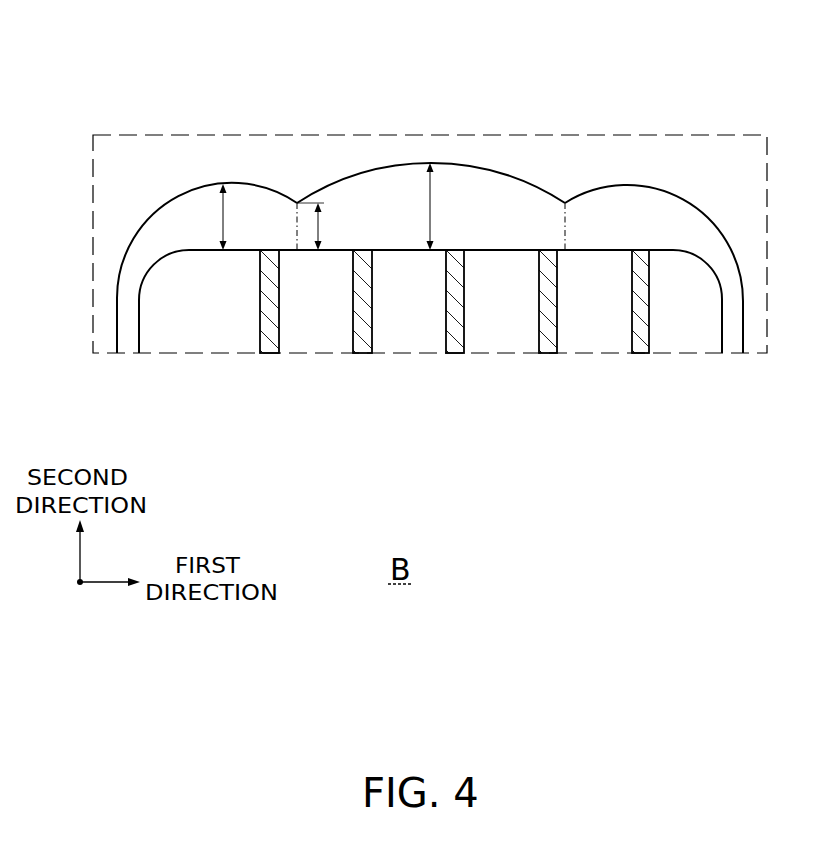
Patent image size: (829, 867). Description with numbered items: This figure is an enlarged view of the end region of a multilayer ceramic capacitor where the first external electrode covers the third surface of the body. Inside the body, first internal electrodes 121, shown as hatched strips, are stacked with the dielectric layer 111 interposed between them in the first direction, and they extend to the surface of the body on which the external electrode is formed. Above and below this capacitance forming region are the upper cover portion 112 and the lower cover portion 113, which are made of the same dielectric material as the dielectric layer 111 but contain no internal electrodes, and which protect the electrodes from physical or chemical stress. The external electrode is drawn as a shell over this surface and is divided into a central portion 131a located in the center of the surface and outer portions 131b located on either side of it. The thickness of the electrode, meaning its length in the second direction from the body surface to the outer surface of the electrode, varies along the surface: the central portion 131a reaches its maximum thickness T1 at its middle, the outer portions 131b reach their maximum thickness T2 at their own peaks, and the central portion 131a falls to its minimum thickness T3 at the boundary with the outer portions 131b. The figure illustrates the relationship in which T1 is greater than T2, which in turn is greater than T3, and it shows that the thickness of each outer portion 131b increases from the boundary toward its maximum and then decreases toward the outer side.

The dielectric layer 111 is at (330, 348).
The upper cover portion 112 is at (685, 341).
The lower cover portion 113 is at (183, 338).
The first internal electrode 121 is at (265, 344).
The central portion 131a is at (483, 213).
The outer portion 131b is at (253, 210).
The maximum thickness of central portion T1 is at (433, 210).
The maximum thickness of outer portion T2 is at (222, 221).
The minimum thickness of central portion T3 is at (323, 228).